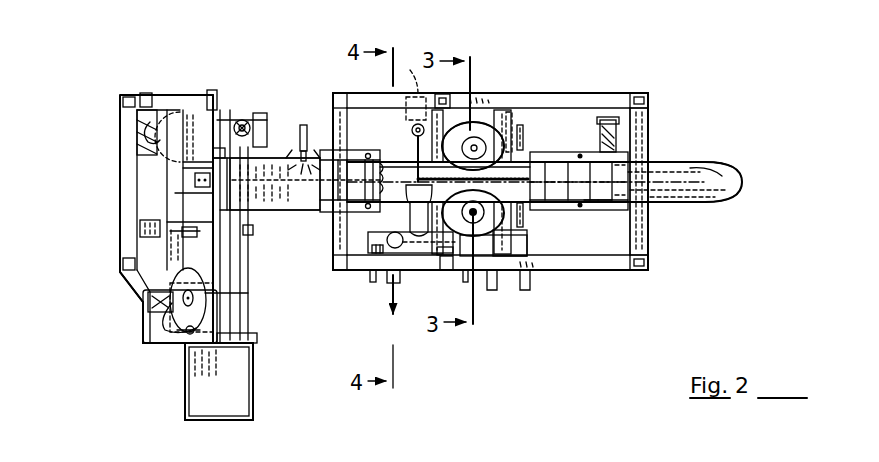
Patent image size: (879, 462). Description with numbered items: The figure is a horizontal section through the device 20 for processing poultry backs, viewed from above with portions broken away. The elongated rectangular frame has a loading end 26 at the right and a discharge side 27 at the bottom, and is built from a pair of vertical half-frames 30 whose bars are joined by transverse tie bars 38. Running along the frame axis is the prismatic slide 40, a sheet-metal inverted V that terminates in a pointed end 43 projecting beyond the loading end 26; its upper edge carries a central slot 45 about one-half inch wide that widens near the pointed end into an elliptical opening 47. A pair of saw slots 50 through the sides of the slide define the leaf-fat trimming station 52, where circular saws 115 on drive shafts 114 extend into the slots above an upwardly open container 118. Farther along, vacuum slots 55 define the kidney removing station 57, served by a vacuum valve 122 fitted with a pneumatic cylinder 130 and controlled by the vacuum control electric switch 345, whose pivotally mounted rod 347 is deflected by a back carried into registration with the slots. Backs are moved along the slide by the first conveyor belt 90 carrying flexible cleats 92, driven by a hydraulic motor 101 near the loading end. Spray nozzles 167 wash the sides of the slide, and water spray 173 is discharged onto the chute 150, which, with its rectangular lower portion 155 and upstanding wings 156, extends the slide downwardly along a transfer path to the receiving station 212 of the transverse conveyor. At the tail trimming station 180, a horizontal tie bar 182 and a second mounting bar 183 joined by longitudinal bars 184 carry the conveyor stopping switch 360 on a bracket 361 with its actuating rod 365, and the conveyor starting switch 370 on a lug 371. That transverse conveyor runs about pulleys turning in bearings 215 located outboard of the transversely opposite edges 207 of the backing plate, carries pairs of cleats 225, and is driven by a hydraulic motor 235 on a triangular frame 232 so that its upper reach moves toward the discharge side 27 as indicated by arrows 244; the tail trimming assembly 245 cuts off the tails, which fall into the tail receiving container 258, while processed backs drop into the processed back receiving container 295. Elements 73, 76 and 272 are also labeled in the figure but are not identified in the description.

The device for processing poultry backs 20 is at (94, 69).
The loading end 26 is at (652, 232).
The discharge side 27 is at (577, 270).
The half-frames 30 is at (533, 92).
The tie bars 38 is at (347, 240).
The prismatic slide 40 is at (724, 156).
The pointed end 43 is at (736, 180).
The central slot 45 is at (683, 183).
The opening 47 is at (703, 178).
The saw slots 50 is at (533, 170).
The leaf-fat trimming station 52 is at (490, 82).
The vacuum slots 55 is at (409, 190).
The kidney removing station 57 is at (405, 64).
The clamp jaw 73 is at (591, 195).
The pivot pin 76 is at (581, 153).
The first conveyor belt 90 is at (640, 170).
The cleats 92 is at (605, 195).
The hydraulic motor 101 is at (610, 120).
The drive shaft 114 is at (476, 214).
The circular saw 115 is at (483, 133).
The container 118 is at (508, 116).
The vacuum valve 122 is at (406, 247).
The pneumatic cylinder 130 is at (527, 240).
The chute 150 is at (292, 120).
The rectangular lower portion 155 is at (270, 201).
The wings 156 is at (275, 162).
The spray nozzle 167 is at (521, 146).
The water spray 173 is at (310, 156).
The tail trimming station 180 is at (134, 313).
The horizontal tie bar 182 is at (128, 210).
The second mounting bar 183 is at (175, 193).
The longitudinal bars 184 is at (152, 95).
The transversely opposite edges 207 is at (238, 124).
The receiving station 212 is at (248, 230).
The bearings 215 is at (253, 113).
The pairs of cleats 225 is at (222, 325).
The triangular frame 232 is at (142, 136).
The hydraulic motor 235 is at (152, 123).
The arrows 244 is at (220, 262).
The tail trimming assembly 245 is at (132, 296).
The tail receiving container 258 is at (142, 332).
The cross pin 272 is at (213, 294).
The processed back receiving container 295 is at (238, 407).
The vacuum control electric switch 345 is at (419, 116).
The mounting rod 347 is at (413, 142).
The conveyor stopping electric switch 360 is at (190, 150).
The bracket 361 is at (197, 98).
The actuating rod 365 is at (221, 152).
The conveyor starting electrical switch 370 is at (193, 183).
The lug 371 is at (185, 166).